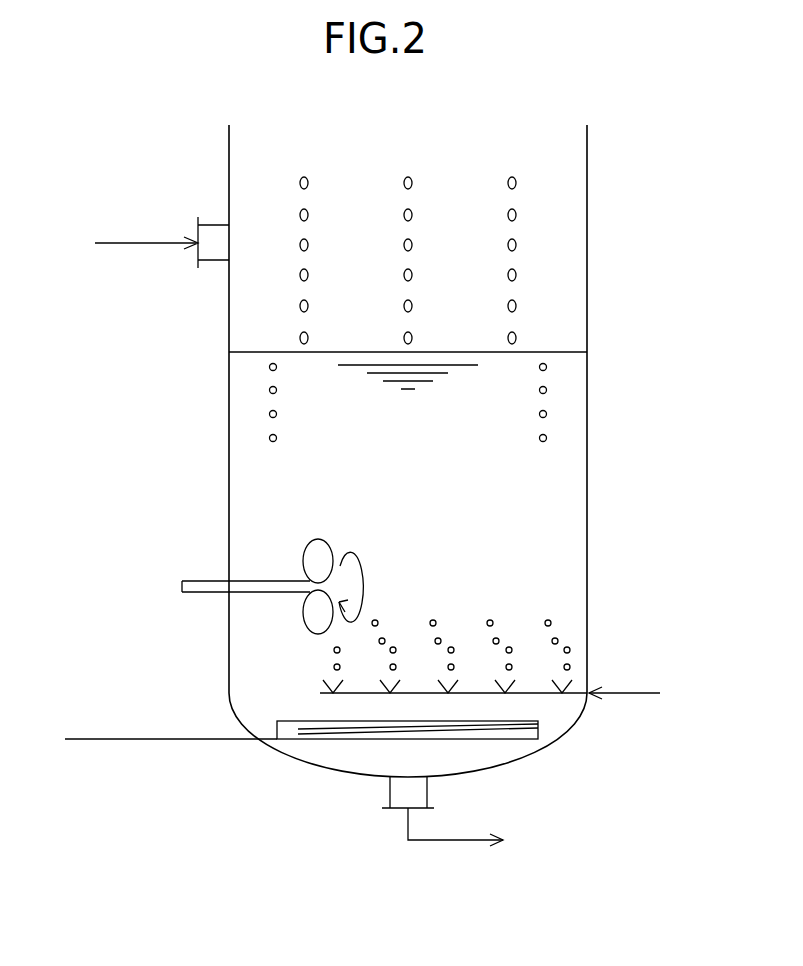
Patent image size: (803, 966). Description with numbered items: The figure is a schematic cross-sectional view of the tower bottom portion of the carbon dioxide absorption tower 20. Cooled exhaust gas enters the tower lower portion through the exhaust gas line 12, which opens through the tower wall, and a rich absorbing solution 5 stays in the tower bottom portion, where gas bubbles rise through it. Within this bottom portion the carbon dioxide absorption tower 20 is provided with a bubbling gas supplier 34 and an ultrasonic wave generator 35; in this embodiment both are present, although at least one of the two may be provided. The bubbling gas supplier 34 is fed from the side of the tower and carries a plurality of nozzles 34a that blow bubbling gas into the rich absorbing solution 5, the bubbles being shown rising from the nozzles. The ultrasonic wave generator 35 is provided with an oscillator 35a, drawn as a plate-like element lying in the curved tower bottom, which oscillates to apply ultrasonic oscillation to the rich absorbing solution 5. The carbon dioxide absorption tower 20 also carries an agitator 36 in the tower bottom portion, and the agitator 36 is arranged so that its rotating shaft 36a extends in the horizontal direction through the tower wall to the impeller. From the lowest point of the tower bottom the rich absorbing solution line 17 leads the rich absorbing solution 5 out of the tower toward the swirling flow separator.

The exhaust gas line 12 is at (138, 242).
The carbon dioxide absorption tower 20 is at (587, 258).
The rich absorbing solution 5 is at (566, 423).
The agitator 36 is at (303, 558).
The rotating shaft 36a is at (212, 596).
The bubbling gas supplier 34 is at (633, 692).
The nozzles 34a is at (320, 683).
The ultrasonic wave generator 35 is at (120, 741).
The oscillator 35a is at (298, 731).
The rich absorbing solution line 17 is at (455, 844).